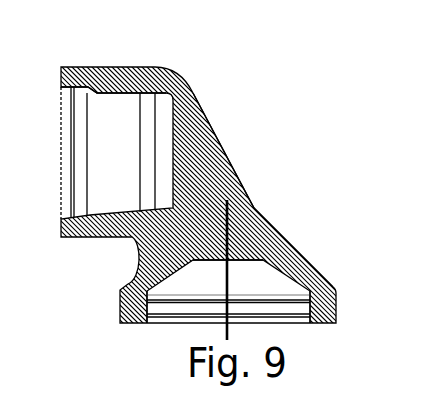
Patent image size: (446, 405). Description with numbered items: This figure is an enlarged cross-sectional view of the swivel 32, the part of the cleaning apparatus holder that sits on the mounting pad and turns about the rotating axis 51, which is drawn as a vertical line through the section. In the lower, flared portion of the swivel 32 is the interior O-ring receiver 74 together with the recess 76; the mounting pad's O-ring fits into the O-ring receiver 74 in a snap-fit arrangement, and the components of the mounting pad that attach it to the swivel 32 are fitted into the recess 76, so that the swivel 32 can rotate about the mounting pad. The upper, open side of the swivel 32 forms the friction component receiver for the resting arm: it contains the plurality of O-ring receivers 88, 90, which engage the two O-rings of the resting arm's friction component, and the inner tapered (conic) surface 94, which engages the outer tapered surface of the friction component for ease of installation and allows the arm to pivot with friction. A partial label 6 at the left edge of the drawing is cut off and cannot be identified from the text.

The bearing assembly 6 is at (43, 181).
The swivel 32 is at (226, 153).
The rotating axis 51 is at (228, 262).
The O-ring receiver 74 is at (143, 305).
The recess 76 is at (312, 306).
The O-ring receiver 88 is at (150, 97).
The O-ring receiver 90 is at (78, 100).
The inner tapered (conic) surface 94 is at (108, 92).